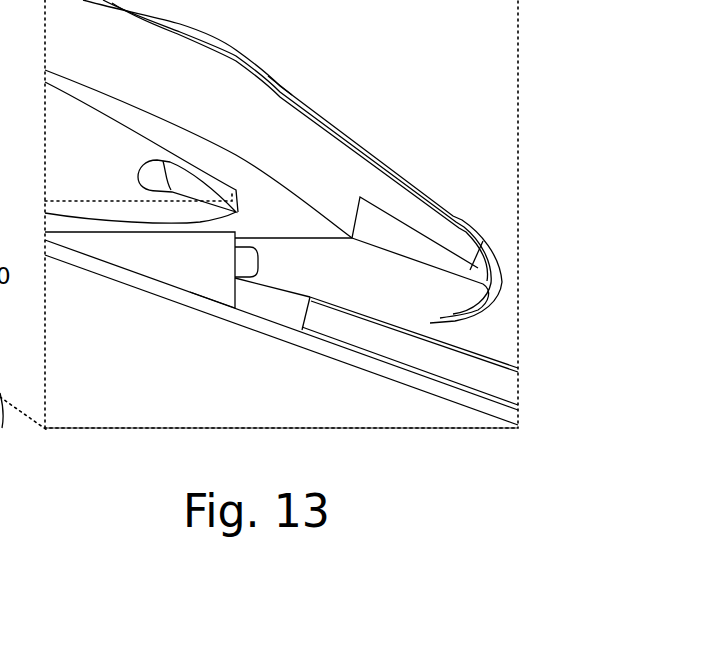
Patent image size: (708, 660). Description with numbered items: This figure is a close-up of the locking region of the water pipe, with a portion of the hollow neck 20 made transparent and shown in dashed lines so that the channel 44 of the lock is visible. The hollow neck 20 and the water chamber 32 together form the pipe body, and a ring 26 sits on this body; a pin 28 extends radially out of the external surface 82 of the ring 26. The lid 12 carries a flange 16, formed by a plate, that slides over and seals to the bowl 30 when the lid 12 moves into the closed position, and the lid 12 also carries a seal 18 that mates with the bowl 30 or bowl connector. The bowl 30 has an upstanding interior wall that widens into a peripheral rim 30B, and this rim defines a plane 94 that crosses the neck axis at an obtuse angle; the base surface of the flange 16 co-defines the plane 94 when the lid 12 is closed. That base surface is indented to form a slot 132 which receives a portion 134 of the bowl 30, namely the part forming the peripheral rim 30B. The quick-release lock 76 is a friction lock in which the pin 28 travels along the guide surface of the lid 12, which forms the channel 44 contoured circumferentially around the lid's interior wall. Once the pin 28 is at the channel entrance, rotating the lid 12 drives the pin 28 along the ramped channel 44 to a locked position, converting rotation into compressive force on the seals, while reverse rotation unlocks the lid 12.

The lid 12 is at (279, 88).
The flange 16 is at (351, 140).
The seal 18 is at (443, 311).
The hollow neck 20 is at (62, 104).
The channel 44 is at (138, 175).
The ring 26 is at (165, 270).
The external surface 82 is at (205, 283).
The pin 28 is at (258, 258).
The quick-release lock 76 is at (280, 252).
The peripheral rim 30B is at (318, 297).
The bowl 30 is at (300, 313).
The water chamber 32 is at (113, 405).
The slot 132 is at (410, 305).
The portion of the bowl 134 is at (425, 360).
The plane 94 is at (0, 303).